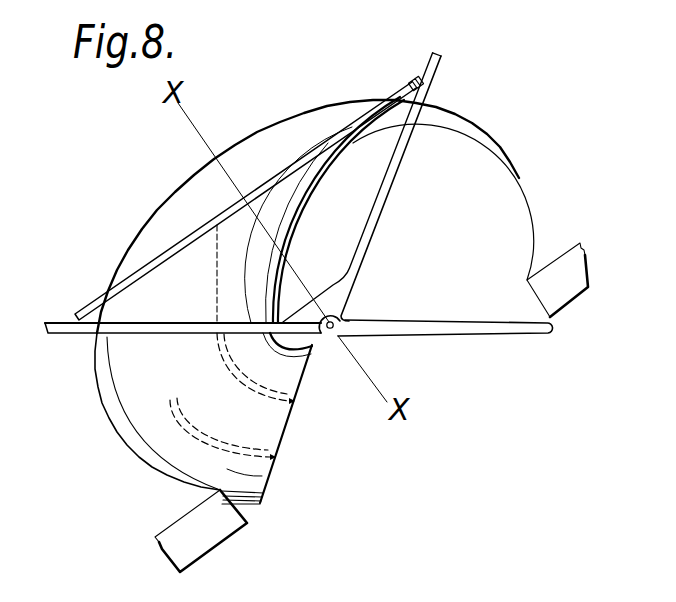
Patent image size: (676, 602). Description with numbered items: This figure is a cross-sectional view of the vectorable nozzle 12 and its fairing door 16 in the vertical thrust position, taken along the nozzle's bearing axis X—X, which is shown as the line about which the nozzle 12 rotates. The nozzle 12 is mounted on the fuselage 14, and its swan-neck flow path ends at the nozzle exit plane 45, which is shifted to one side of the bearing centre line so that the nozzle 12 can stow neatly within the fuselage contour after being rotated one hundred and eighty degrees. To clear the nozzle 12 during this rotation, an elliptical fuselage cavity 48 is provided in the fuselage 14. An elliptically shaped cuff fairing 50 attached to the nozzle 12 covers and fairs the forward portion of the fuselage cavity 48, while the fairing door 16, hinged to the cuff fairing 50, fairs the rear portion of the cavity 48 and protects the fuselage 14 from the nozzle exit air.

The vectorable nozzle 12 is at (150, 433).
The fuselage 14 is at (573, 300).
The fairing door 16 is at (453, 327).
The nozzle exit plane 45 is at (262, 476).
The fuselage cavity 48 is at (477, 178).
The cuff fairing 50 is at (55, 334).